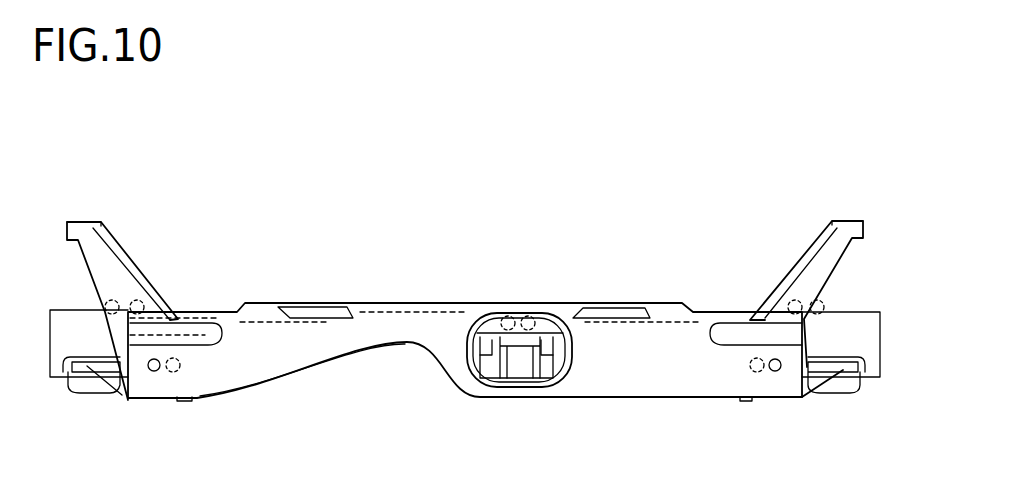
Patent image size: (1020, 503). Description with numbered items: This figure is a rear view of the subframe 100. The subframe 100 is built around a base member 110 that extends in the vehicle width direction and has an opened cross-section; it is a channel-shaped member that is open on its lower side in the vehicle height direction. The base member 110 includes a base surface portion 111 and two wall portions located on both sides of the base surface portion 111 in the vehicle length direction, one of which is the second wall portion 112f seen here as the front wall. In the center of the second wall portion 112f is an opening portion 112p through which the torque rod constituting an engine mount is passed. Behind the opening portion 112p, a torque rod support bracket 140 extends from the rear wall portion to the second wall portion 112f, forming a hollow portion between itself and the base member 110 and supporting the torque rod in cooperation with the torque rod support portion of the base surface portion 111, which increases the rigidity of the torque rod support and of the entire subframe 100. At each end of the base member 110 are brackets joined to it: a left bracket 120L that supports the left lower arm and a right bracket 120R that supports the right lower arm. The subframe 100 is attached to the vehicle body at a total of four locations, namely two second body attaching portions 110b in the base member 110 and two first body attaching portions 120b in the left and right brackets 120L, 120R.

The subframe 100 is at (730, 229).
The base member 110 is at (323, 300).
The second body attaching portion 110b is at (93, 397).
The base surface portion 111 is at (623, 302).
The second wall portion 112f is at (268, 378).
The opening portion 112p is at (487, 341).
The right bracket 120R is at (127, 262).
The left bracket 120L is at (848, 275).
The first body attaching portion 120b is at (87, 221).
The torque rod support bracket 140 is at (517, 373).